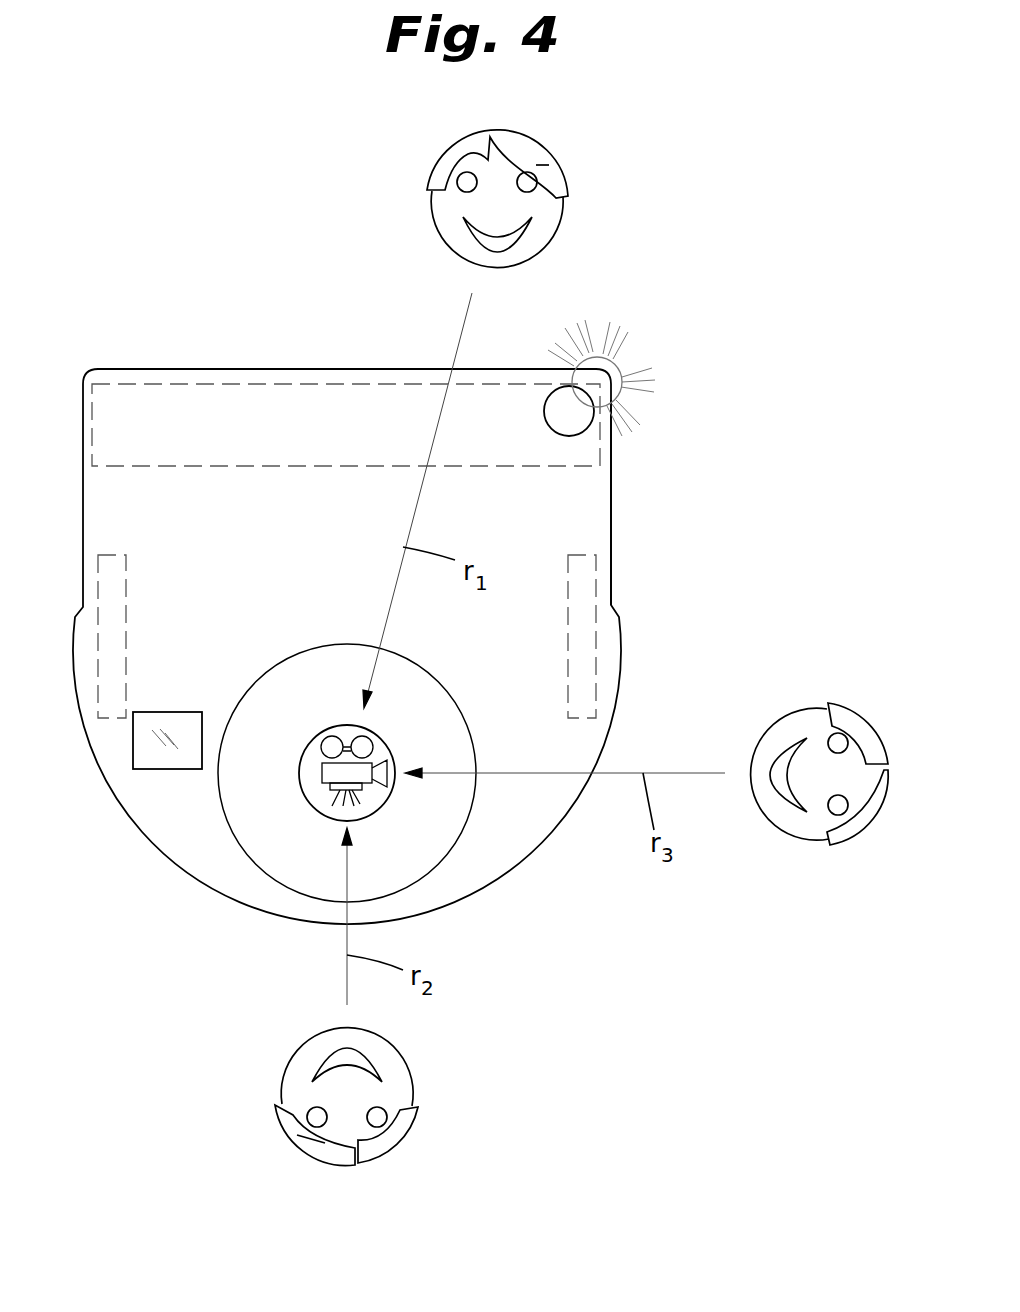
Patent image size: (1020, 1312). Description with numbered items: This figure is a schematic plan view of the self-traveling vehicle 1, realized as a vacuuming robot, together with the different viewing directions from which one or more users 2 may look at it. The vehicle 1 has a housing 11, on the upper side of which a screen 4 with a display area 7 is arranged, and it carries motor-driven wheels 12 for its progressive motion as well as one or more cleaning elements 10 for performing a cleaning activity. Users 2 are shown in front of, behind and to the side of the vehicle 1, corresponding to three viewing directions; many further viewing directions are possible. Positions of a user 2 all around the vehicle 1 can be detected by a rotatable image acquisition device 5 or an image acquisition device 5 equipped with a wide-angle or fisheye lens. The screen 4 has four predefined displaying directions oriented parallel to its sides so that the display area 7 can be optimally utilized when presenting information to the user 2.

The vehicle 1 is at (701, 476).
The user 2 is at (527, 152).
The screen 4 is at (132, 750).
The image acquisition device 5 is at (313, 784).
The display area 7 is at (158, 752).
The cleaning element 10 is at (227, 408).
The housing 11 is at (611, 518).
The wheels 12 is at (112, 592).